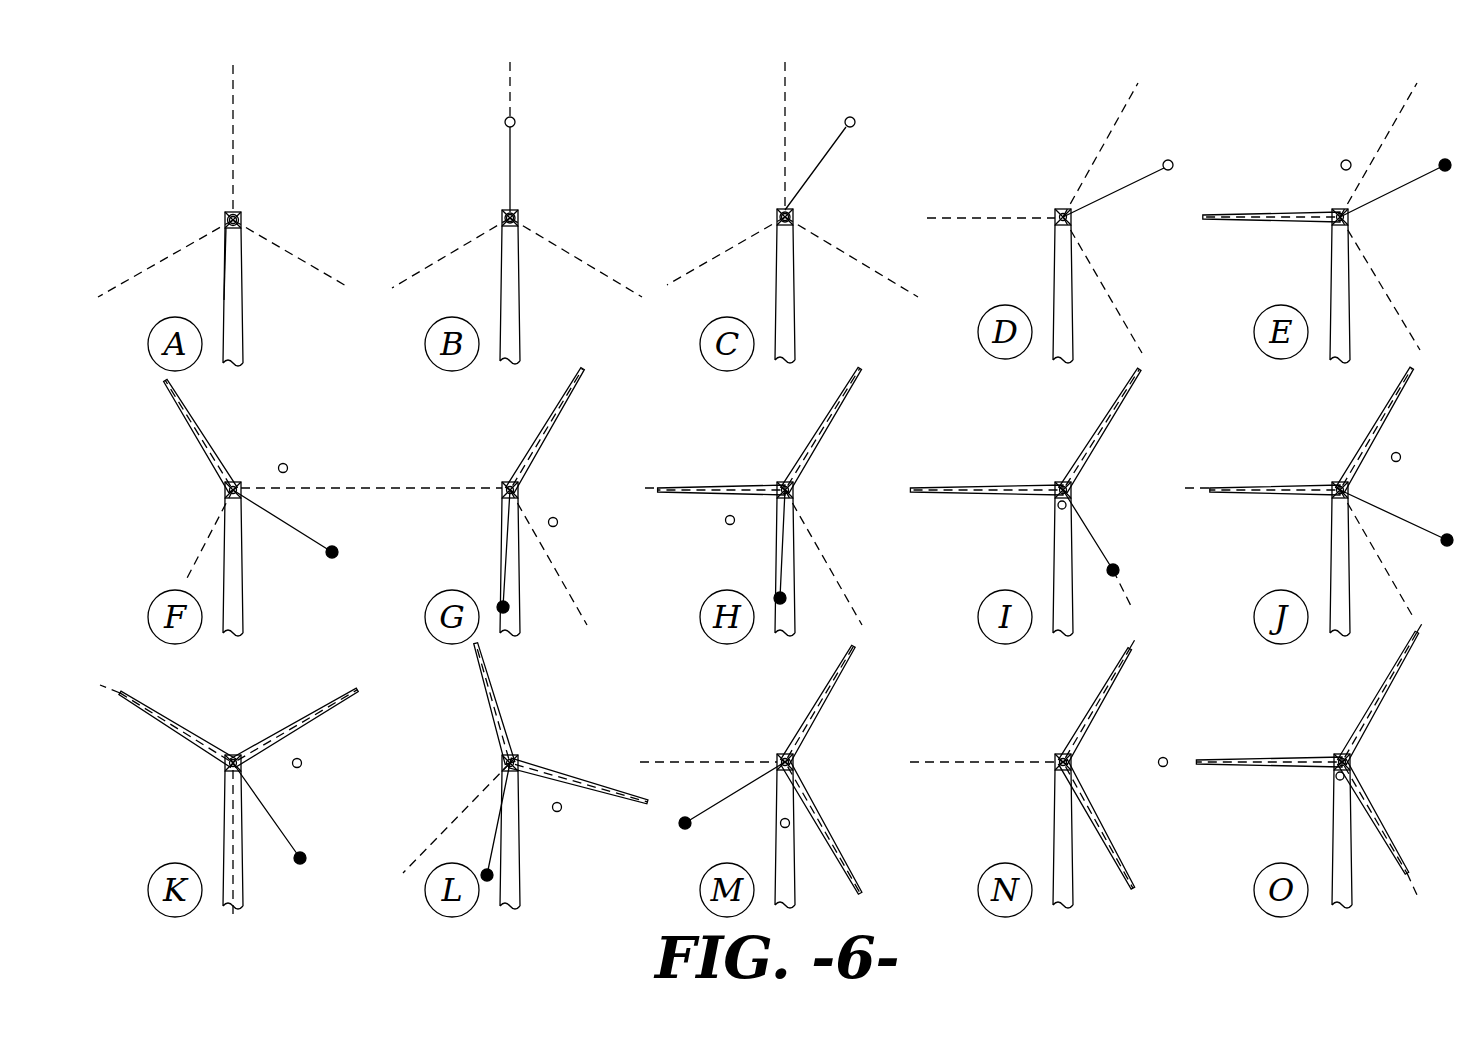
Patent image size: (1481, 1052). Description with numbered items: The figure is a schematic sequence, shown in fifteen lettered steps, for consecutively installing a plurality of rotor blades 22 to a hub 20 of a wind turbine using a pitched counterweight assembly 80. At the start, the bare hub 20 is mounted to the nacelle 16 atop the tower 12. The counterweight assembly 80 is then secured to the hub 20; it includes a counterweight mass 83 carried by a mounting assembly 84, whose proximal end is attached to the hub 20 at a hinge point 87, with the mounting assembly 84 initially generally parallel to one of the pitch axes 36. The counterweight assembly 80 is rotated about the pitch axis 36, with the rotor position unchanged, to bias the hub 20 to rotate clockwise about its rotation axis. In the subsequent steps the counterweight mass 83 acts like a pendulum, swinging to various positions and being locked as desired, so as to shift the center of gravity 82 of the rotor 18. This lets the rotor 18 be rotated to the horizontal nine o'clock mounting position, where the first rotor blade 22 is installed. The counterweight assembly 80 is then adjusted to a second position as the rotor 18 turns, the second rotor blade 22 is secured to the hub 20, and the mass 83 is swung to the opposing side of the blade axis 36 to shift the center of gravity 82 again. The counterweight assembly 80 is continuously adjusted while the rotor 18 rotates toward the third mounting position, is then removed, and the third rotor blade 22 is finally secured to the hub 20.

The tower 12 is at (245, 287).
The nacelle 16 is at (248, 212).
The rotor 18 is at (220, 214).
The hub 20 is at (226, 255).
The rotor blade 22 is at (1285, 226).
The pitch axis 36 is at (275, 242).
The counterweight assembly 80 is at (530, 122).
The center of gravity 82 is at (503, 122).
The counterweight mass 83 is at (518, 115).
The mounting assembly 84 is at (515, 167).
The hinge point 87 is at (507, 208).